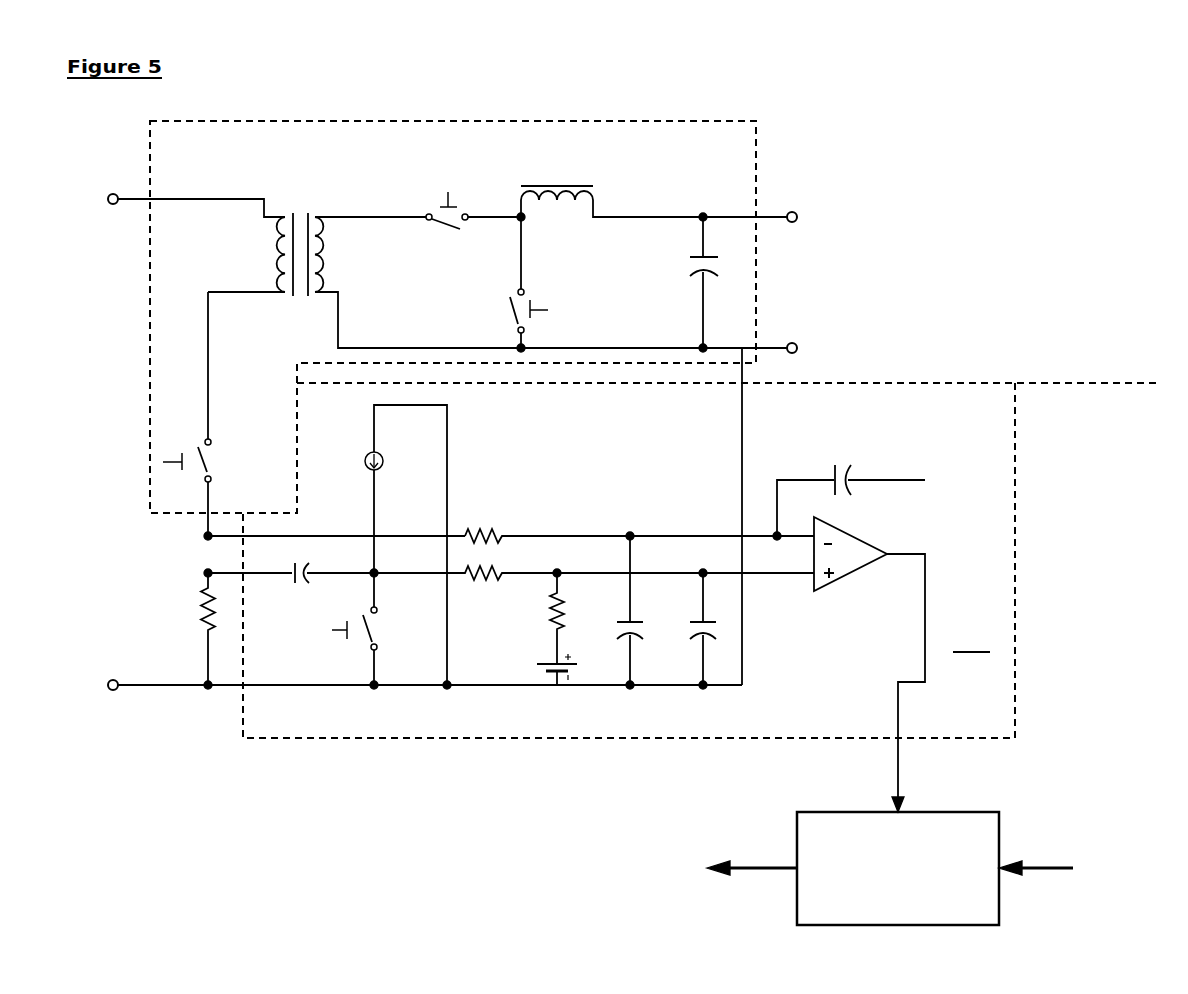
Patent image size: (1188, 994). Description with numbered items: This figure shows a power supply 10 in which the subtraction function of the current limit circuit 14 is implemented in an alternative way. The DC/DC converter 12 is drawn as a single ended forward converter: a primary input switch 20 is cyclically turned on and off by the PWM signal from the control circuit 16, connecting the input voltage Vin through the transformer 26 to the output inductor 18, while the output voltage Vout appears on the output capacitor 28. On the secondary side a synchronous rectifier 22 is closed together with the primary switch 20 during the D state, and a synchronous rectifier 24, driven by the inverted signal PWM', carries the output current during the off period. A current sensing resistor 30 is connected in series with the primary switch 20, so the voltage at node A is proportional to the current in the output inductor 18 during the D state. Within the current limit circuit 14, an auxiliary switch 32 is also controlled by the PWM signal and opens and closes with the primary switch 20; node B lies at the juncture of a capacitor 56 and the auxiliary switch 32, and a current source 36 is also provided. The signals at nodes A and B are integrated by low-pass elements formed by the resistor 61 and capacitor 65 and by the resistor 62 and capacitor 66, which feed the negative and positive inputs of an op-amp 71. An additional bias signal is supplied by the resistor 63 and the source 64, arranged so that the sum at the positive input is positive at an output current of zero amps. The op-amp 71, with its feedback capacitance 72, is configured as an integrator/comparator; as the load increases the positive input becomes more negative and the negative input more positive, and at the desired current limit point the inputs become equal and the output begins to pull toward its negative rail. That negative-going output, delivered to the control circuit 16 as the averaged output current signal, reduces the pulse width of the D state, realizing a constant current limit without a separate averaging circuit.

The power supply 10 is at (1058, 304).
The DC/DC converter 12 is at (388, 120).
The current limit circuit 14 is at (875, 382).
The control circuit 16 is at (1002, 823).
The output inductor 18 is at (587, 180).
The primary input switch 20 is at (225, 457).
The synchronous rectifier 22 is at (460, 210).
The synchronous rectifier 24 is at (535, 298).
The transformer 26 is at (318, 255).
The output capacitor 28 is at (685, 260).
The current sensing resistor 30 is at (200, 615).
The auxiliary switch 32 is at (379, 625).
The current source 36 is at (380, 453).
The coupling capacitor 56 is at (297, 588).
The resistor 61 is at (493, 527).
The resistor 62 is at (490, 586).
The resistor 63 is at (547, 600).
The source 64 is at (538, 663).
The capacitor 65 is at (623, 633).
The capacitor 66 is at (695, 637).
The op-amp 71 is at (850, 574).
The feedback capacitance 72 is at (847, 460).